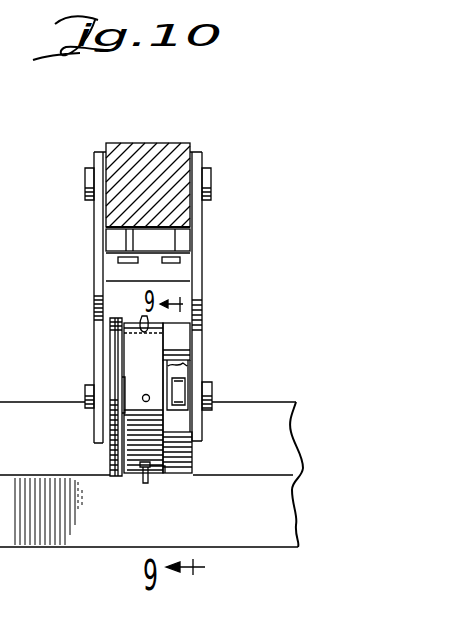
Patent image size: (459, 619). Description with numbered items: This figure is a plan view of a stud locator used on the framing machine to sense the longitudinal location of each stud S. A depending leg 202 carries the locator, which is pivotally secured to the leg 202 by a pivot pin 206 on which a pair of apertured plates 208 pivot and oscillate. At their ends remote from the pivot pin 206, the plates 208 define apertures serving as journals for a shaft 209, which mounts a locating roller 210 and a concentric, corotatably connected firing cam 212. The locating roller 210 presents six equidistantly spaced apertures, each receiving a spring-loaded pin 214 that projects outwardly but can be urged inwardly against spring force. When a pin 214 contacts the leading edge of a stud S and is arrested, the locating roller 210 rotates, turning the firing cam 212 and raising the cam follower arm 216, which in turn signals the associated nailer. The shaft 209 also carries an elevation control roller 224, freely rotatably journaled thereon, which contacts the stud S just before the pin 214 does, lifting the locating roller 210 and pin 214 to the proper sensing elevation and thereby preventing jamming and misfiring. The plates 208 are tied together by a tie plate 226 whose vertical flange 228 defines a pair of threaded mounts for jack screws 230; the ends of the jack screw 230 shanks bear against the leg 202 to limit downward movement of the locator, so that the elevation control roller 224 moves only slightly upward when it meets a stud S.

The leg 202 is at (159, 152).
The pivot pin 206 is at (211, 182).
The plates 208 is at (98, 212).
The shaft 209 is at (213, 388).
The locating roller 210 is at (158, 480).
The firing cam 212 is at (183, 462).
The spring-loaded pin 214 is at (147, 482).
The cam follower arm 216 is at (188, 371).
The elevation control roller 224 is at (117, 349).
The tie plate 226 is at (190, 281).
The vertical flange 228 is at (189, 254).
The jack screws 230 is at (140, 264).
The stud S is at (290, 440).